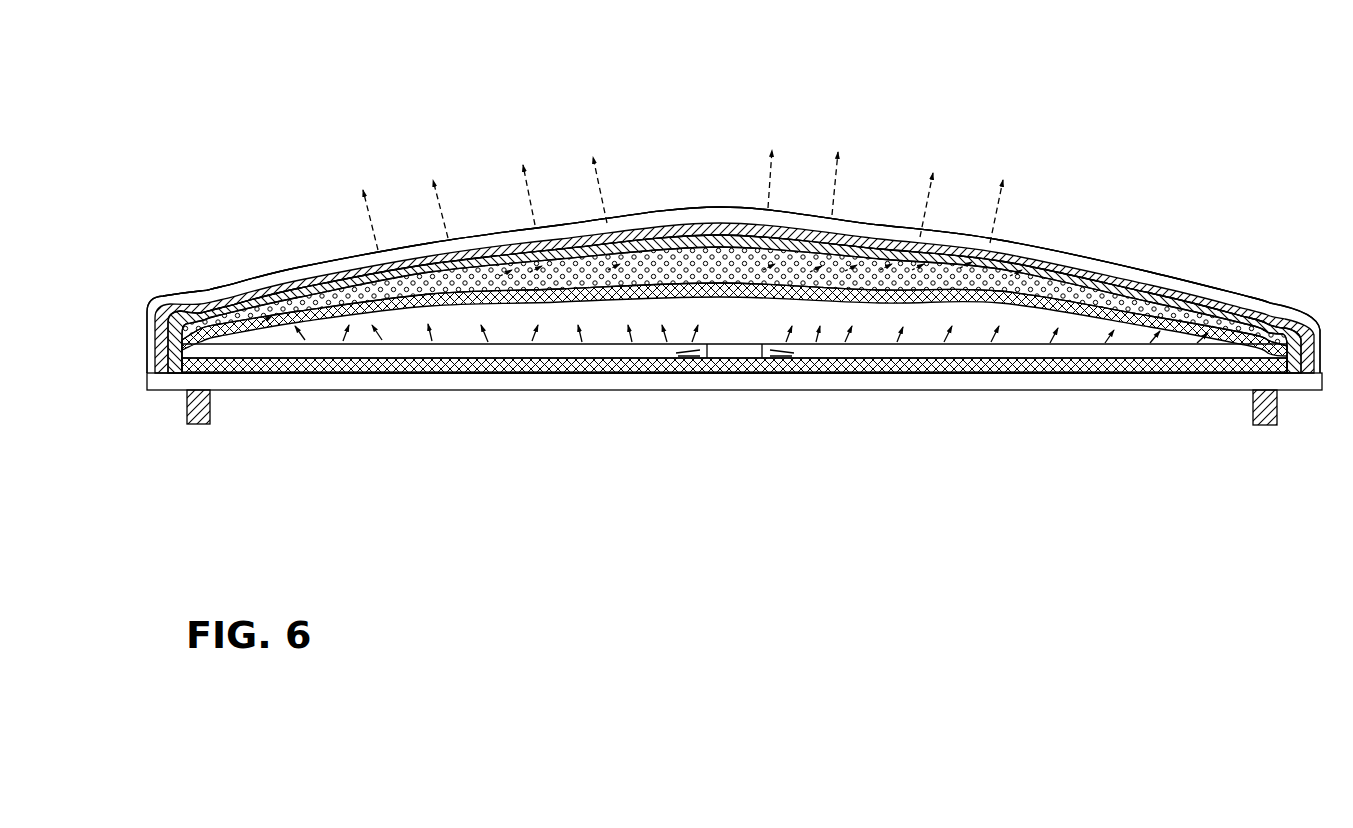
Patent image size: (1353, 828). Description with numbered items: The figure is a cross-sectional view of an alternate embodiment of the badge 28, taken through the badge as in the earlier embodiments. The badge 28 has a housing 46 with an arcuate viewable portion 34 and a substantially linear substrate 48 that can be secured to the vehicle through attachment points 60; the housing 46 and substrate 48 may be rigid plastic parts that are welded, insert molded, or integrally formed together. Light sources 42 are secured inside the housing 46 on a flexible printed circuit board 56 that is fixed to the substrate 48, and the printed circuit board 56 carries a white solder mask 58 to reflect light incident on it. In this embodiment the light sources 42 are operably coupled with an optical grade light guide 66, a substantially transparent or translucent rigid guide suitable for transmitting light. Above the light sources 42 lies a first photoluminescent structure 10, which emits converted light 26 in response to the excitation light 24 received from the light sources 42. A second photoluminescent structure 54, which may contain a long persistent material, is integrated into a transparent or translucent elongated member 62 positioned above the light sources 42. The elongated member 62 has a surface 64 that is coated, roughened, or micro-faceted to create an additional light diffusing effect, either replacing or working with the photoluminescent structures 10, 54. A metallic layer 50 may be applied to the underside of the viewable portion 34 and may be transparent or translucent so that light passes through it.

The first photoluminescent structure 10 is at (350, 310).
The excitation light 24 is at (946, 327).
The converted light 26 is at (960, 195).
The badge 28 is at (266, 138).
The viewable portion 34 is at (627, 222).
The light sources 42 is at (740, 352).
The housing 46 is at (166, 298).
The substrate 48 is at (1167, 392).
The metallic layer 50 is at (318, 283).
The second photoluminescent structure 54 is at (833, 243).
The flexible printed circuit board 56 is at (512, 252).
The white solder mask 58 is at (278, 353).
The attachment points 60 is at (212, 410).
The elongated member 62 is at (567, 278).
The surface 64 is at (689, 285).
The light guide 66 is at (442, 350).